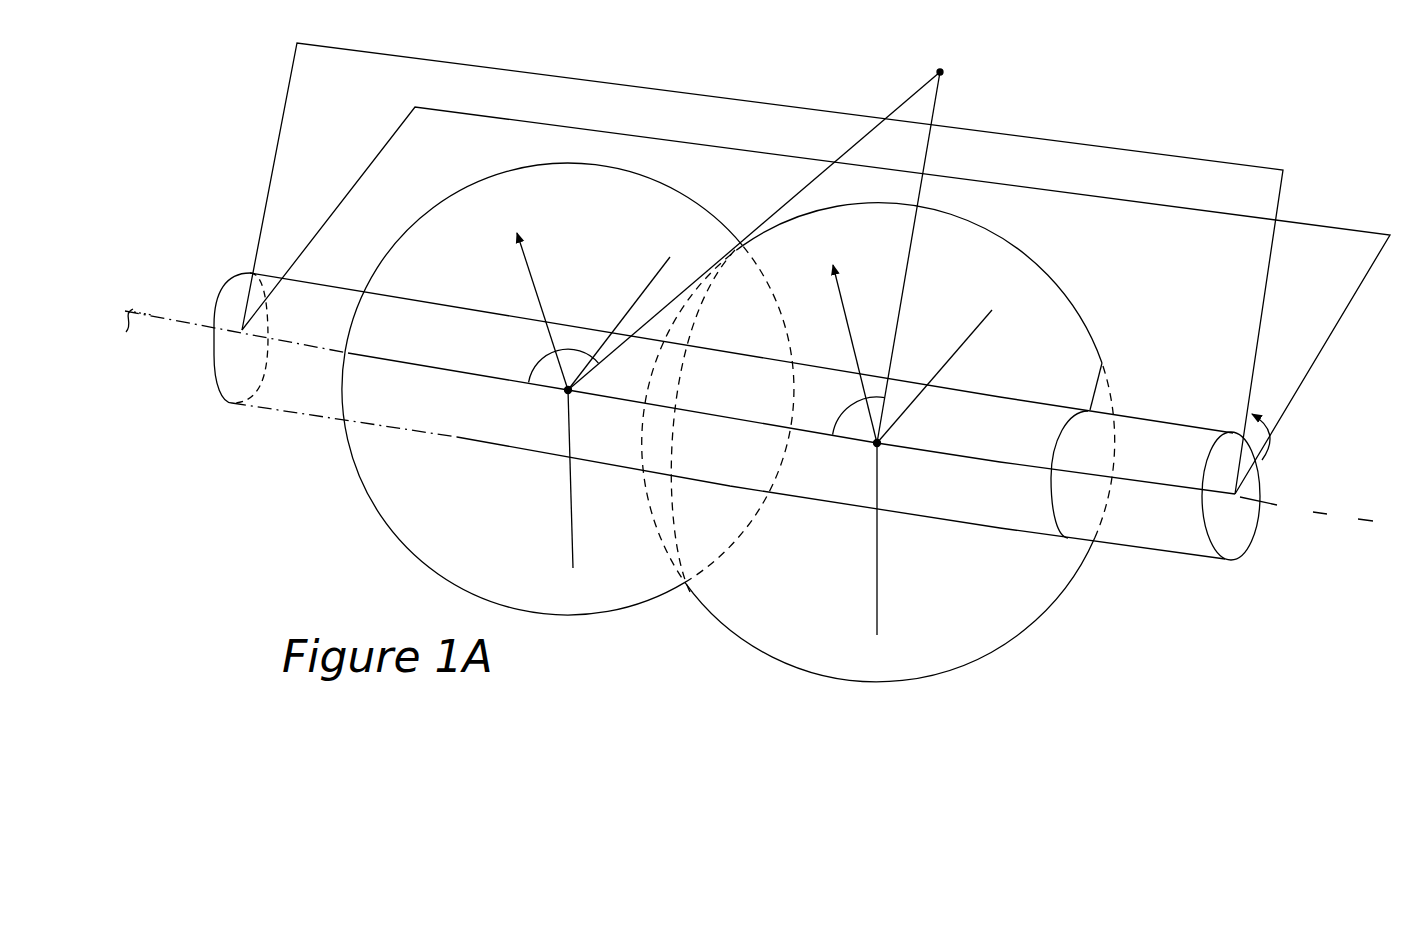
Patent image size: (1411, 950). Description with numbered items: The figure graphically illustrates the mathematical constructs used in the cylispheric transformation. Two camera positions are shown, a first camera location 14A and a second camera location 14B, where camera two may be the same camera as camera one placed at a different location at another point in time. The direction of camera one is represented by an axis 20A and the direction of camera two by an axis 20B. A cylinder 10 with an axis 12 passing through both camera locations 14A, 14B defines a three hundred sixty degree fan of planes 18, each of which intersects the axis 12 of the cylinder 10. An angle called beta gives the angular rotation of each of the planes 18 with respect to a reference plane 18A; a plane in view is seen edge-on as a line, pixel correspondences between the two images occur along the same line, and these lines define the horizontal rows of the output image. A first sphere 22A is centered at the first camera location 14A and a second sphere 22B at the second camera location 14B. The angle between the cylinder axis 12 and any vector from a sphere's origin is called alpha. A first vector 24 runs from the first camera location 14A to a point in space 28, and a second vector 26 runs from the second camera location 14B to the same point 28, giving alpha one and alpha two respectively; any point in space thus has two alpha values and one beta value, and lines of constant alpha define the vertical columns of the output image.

The cylinder 10 is at (283, 414).
The axis 12 is at (160, 316).
The first camera location 14A is at (563, 396).
The second camera location 14B is at (868, 451).
The planes 18 is at (1309, 200).
The reference plane 18A is at (1306, 379).
The axis 20A is at (548, 313).
The axis 20B is at (859, 353).
The first sphere 22A is at (577, 163).
The second sphere 22B is at (977, 224).
The first vector 24 is at (837, 157).
The second vector 26 is at (930, 158).
The point in space 28 is at (946, 64).